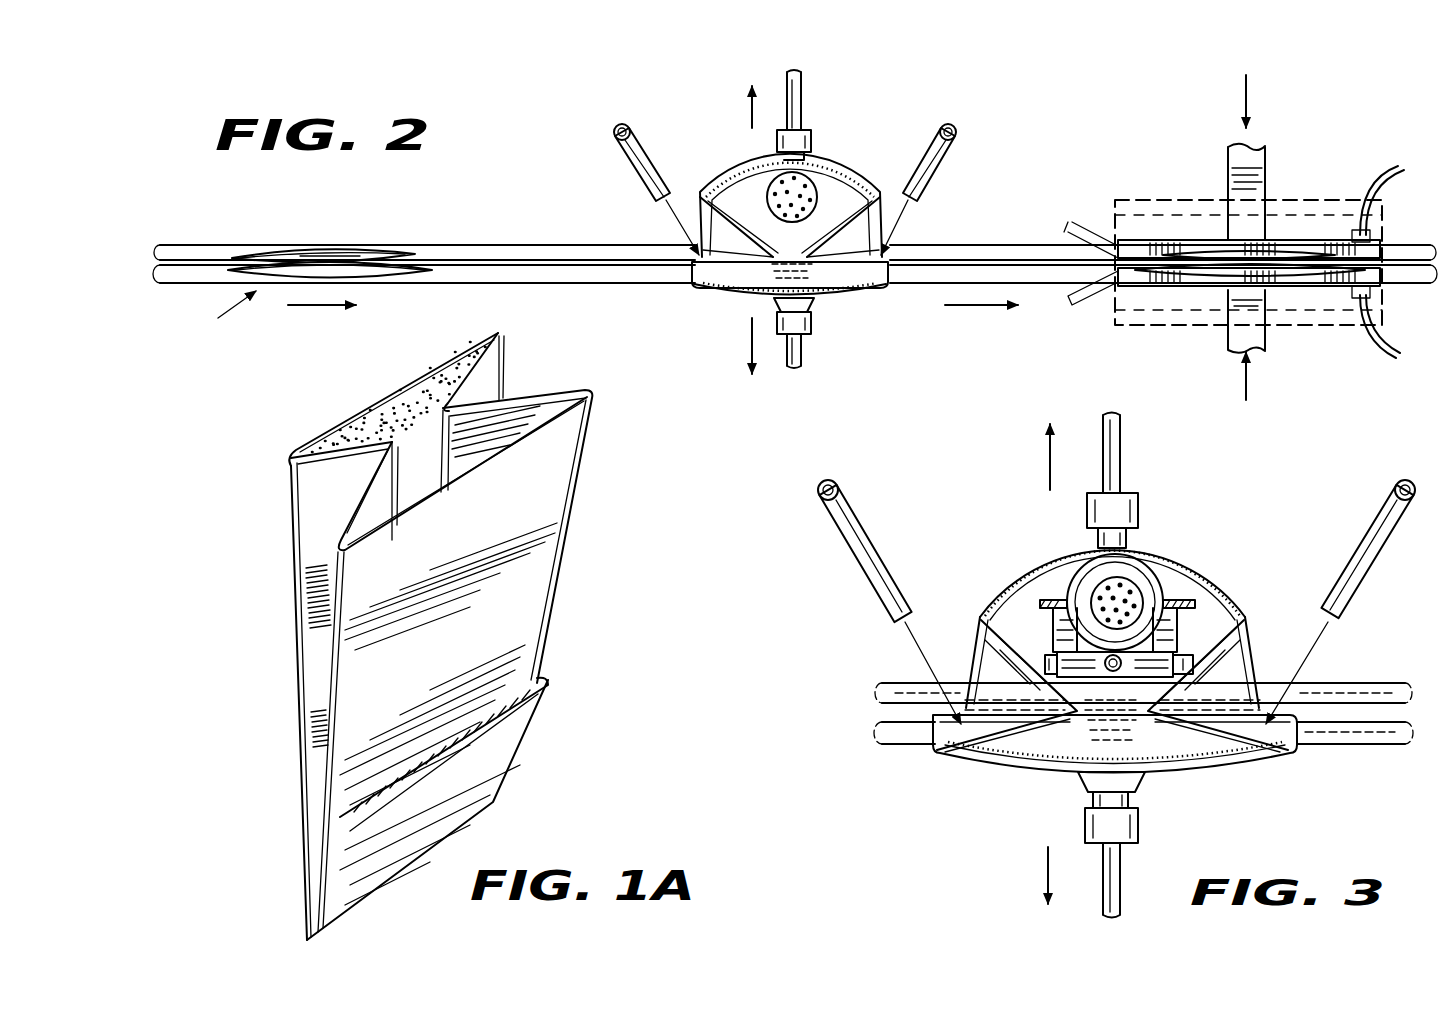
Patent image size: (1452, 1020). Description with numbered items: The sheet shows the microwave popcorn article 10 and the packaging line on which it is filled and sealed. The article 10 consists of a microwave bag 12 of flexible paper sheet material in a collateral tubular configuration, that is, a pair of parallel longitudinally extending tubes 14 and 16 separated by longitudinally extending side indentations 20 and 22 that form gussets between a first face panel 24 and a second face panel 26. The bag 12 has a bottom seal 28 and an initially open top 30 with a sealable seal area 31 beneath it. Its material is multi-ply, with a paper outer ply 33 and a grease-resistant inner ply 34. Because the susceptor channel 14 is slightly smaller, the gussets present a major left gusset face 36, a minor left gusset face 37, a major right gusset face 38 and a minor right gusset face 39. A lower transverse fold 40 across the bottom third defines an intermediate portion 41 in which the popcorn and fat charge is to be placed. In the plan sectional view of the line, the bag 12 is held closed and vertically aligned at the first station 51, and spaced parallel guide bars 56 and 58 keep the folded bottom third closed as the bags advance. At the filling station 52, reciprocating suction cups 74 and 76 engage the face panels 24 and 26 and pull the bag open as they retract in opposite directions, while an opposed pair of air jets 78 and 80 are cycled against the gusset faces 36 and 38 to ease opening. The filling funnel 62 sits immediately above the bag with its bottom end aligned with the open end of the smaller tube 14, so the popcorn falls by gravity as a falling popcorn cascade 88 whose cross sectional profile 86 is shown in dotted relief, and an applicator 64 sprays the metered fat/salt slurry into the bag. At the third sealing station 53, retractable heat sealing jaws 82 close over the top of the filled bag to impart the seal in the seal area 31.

In FIG. 1A, the microwave popcorn article 10 is at (441, 630).
In FIG. 2, the microwave bag 12 is at (730, 302).
In FIG. 1A, the microwave bag 12 is at (552, 633).
In FIG. 3, the microwave bag 12 is at (1216, 574).
In FIG. 1A, the susceptor channel 14 is at (540, 527).
In FIG. 1A, the tube 16 is at (418, 428).
In FIG. 1A, the side indentation 20 is at (292, 481).
In FIG. 1A, the side indentation 22 is at (455, 402).
In FIG. 1A, the first face panel 24 is at (462, 661).
In FIG. 1A, the second face panel 26 is at (417, 457).
In FIG. 1A, the bottom seal 28 is at (527, 708).
In FIG. 1A, the open top 30 is at (375, 483).
In FIG. 1A, the seal area 31 is at (346, 433).
In FIG. 1A, the outer ply 33 is at (347, 663).
In FIG. 1A, the inner ply 34 is at (413, 484).
In FIG. 1A, the major left gusset face 36 is at (373, 517).
In FIG. 1A, the minor left gusset face 37 is at (318, 526).
In FIG. 1A, the major right gusset face 38 is at (508, 410).
In FIG. 1A, the minor right gusset face 39 is at (482, 373).
In FIG. 1A, the lower transverse fold 40 is at (467, 830).
In FIG. 1A, the intermediate portion 41 is at (340, 762).
In FIG. 2, the first station 51 is at (360, 245).
In FIG. 2, the filling station 52 is at (858, 160).
In FIG. 3, the filling station 52 is at (1250, 621).
In FIG. 2, the third sealing station 53 is at (1296, 240).
In FIG. 2, the guide bar 56 is at (496, 284).
In FIG. 3, the guide bar 56 is at (1358, 750).
In FIG. 2, the guide bar 58 is at (484, 246).
In FIG. 3, the guide bar 58 is at (1376, 683).
In FIG. 3, the filling funnel 62 is at (1152, 580).
In FIG. 3, the applicator 64 is at (1112, 675).
In FIG. 2, the suction cup 74 is at (803, 101).
In FIG. 3, the suction cup 74 is at (1122, 446).
In FIG. 2, the suction cup 76 is at (803, 351).
In FIG. 3, the suction cup 76 is at (1103, 890).
In FIG. 2, the air jet 78 is at (655, 166).
In FIG. 3, the air jet 78 is at (870, 532).
In FIG. 2, the air jet 80 is at (925, 187).
In FIG. 3, the air jet 80 is at (1367, 522).
In FIG. 2, the heat sealing jaws 82 is at (1312, 288).
In FIG. 2, the popcorn cascade profile 86 is at (828, 198).
In FIG. 3, the falling popcorn cascade 88 is at (1098, 592).